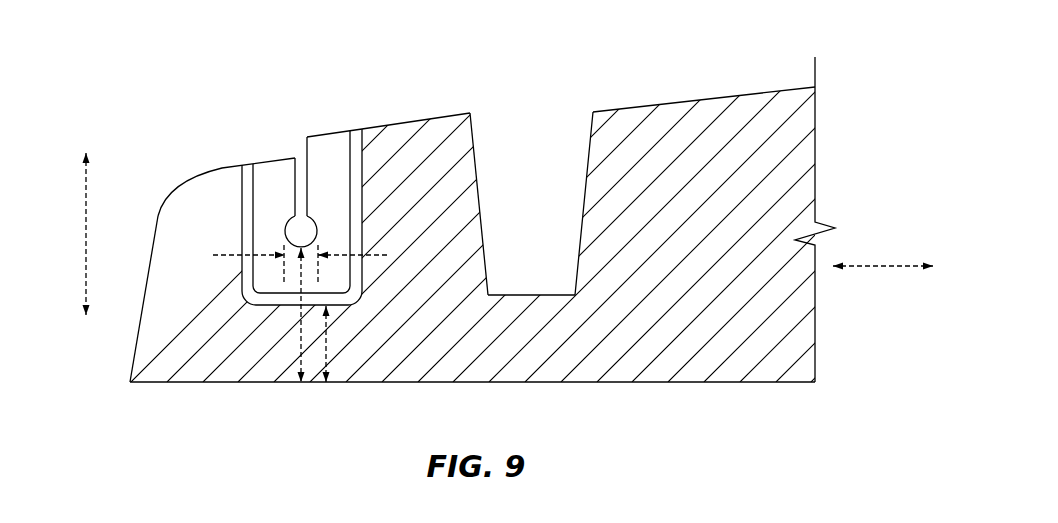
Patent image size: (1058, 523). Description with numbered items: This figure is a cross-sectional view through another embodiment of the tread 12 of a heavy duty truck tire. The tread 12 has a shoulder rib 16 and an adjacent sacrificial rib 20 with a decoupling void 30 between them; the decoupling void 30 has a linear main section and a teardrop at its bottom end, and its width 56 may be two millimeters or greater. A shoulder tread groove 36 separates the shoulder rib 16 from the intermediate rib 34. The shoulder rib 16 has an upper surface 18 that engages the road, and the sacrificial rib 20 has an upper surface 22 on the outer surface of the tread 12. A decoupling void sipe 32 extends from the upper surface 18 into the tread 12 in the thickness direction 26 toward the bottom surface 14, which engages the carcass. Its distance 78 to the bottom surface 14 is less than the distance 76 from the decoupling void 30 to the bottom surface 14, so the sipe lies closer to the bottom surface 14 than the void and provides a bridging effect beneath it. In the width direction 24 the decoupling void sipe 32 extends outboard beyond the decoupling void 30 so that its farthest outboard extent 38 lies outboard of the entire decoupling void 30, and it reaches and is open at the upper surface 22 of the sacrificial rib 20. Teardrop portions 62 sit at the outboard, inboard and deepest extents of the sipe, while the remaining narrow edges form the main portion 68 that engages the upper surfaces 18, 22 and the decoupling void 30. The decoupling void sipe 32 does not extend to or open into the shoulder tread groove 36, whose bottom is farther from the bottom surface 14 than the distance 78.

The tread 12 is at (837, 55).
The bottom surface 14 is at (710, 388).
The shoulder rib 16 is at (474, 128).
The upper surface 18 is at (400, 116).
The sacrificial rib 20 is at (168, 216).
The upper surface 22 is at (222, 164).
The width direction 24 is at (883, 268).
The thickness direction 26 is at (84, 234).
The decoupling void 30 is at (300, 157).
The decoupling void sipe 32 is at (333, 134).
The intermediate rib 34 is at (722, 99).
The shoulder tread groove 36 is at (546, 227).
The farthest outboard extent 38 is at (240, 279).
The width 56 is at (375, 254).
The teardrop portion 62 is at (358, 161).
The main portion 68 is at (342, 179).
The distance 76 is at (299, 345).
The distance 78 is at (327, 342).